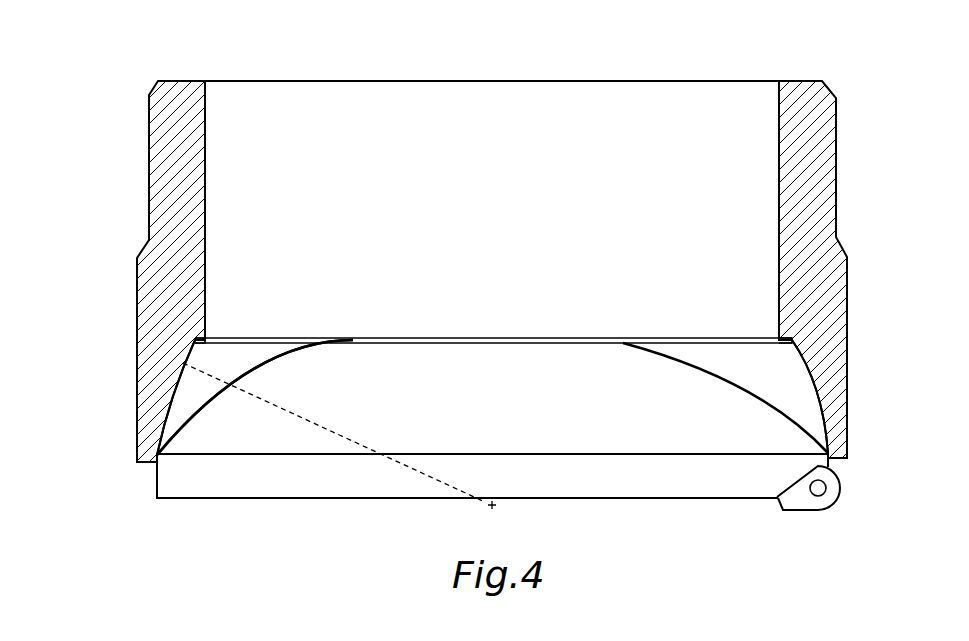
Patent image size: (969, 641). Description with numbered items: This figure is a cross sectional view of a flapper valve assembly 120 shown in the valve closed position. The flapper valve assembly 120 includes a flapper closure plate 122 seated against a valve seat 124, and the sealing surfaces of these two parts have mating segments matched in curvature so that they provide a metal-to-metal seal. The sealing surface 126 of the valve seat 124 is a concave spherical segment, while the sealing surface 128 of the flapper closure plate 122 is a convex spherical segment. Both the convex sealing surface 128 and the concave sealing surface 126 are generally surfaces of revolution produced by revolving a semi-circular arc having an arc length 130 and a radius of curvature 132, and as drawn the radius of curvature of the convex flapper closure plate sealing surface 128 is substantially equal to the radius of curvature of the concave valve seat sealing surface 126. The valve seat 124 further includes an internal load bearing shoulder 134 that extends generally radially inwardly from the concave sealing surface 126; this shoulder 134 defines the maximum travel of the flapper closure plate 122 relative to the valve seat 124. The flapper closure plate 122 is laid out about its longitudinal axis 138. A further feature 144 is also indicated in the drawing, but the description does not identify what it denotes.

The flapper valve assembly 120 is at (628, 62).
The flapper closure plate 122 is at (680, 487).
The valve seat 124 is at (176, 98).
The sealing surface of valve seat 126 is at (183, 367).
The sealing surface of flapper closure plate 128 is at (167, 423).
The arc length 130 is at (812, 378).
The radius of curvature 132 is at (318, 422).
The internal load bearing shoulder 134 is at (203, 330).
The longitudinal axis 138 is at (818, 503).
The gap 144 is at (492, 345).